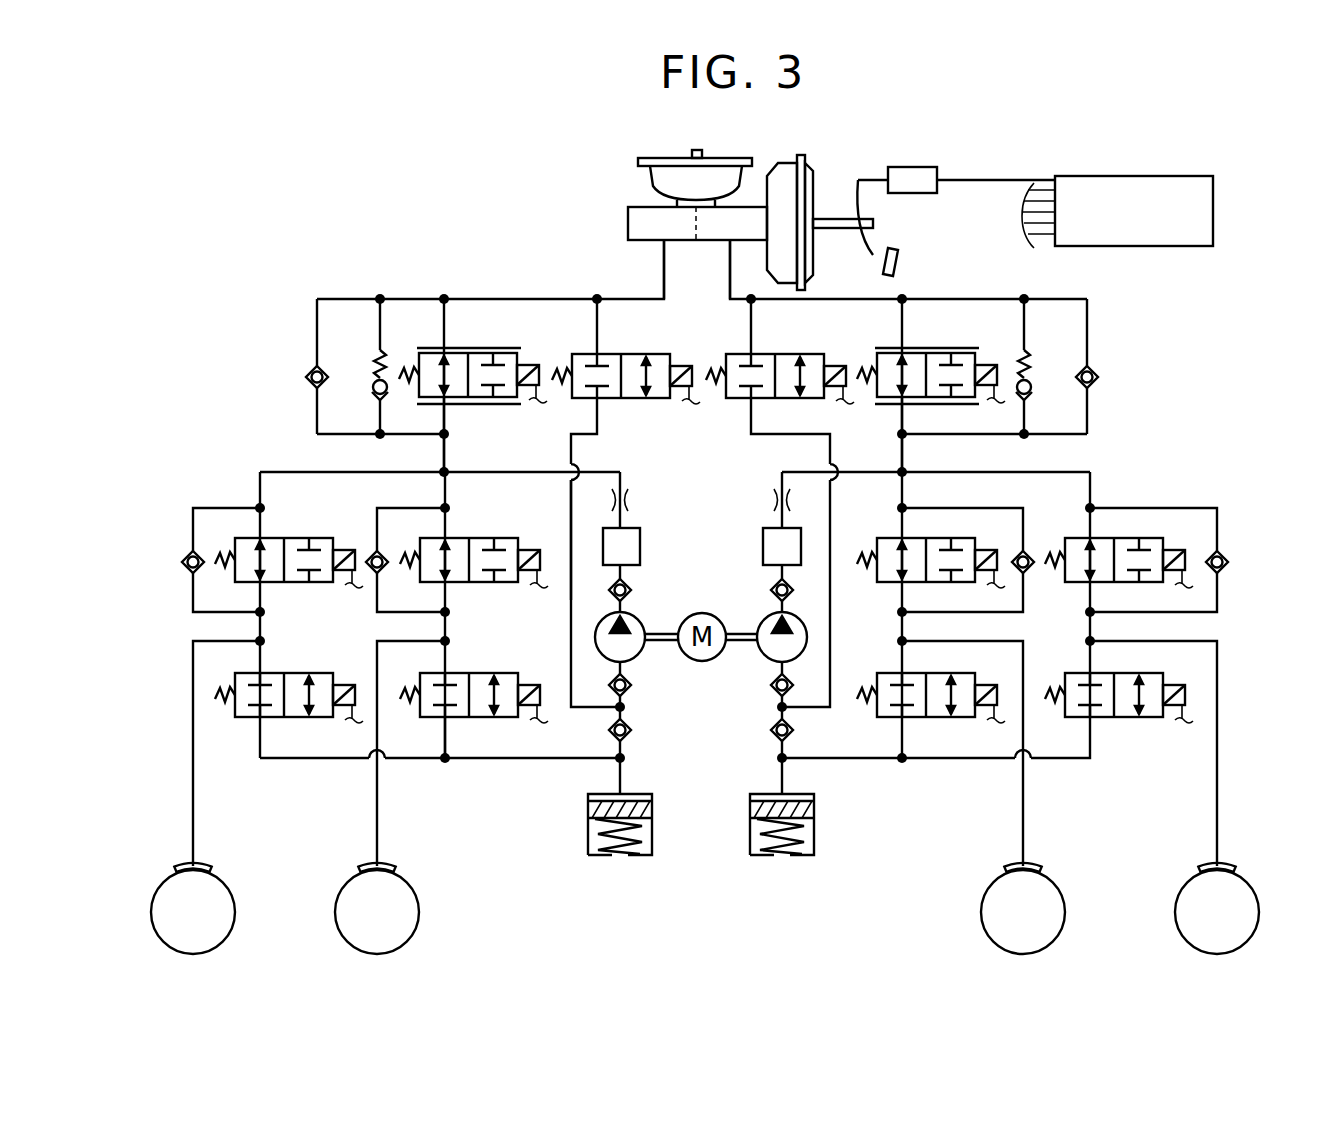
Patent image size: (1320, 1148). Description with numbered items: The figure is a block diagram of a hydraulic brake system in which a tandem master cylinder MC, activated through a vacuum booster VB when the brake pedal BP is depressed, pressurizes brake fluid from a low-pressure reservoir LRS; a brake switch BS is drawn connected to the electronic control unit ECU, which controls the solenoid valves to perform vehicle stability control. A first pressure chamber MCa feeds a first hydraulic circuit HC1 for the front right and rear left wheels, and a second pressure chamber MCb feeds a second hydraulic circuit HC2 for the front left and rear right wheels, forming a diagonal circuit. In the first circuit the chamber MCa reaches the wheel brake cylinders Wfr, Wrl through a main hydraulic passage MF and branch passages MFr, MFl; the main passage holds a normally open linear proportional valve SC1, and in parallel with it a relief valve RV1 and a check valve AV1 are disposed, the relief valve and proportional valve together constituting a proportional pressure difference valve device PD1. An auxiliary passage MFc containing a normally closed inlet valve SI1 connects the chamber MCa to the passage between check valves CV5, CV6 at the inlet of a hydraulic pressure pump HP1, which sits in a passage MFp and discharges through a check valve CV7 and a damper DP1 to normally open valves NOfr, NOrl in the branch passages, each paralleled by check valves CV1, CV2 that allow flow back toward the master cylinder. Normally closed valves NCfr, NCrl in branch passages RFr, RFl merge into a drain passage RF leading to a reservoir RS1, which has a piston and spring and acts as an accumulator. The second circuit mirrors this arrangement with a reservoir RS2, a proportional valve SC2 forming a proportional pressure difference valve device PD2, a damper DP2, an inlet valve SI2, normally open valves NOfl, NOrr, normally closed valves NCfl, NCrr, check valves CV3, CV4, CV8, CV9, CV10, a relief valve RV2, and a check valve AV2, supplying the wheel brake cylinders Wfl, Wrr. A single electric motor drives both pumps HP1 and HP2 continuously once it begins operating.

The low-pressure reservoir LRS is at (660, 186).
The master cylinder MC is at (628, 222).
The first pressure chamber MCa is at (650, 244).
The second pressure chamber MCb is at (722, 244).
The vacuum booster VB is at (815, 262).
The brake pedal BP is at (875, 237).
The brake switch BS is at (956, 180).
The electronic control unit ECU is at (1117, 212).
The first hydraulic circuit HC1 is at (444, 288).
The second hydraulic circuit HC2 is at (963, 288).
The proportional valve SC1 is at (468, 352).
The proportional solenoid valve SC2 is at (926, 352).
The inlet valve SI1 is at (622, 353).
The inlet valve SI2 is at (776, 353).
The check valve AV1 is at (308, 384).
The check valve AV2 is at (1096, 384).
The relief valve RV1 is at (370, 392).
The relief valve RV2 is at (1034, 392).
The proportional pressure difference valve device PD1 is at (507, 414).
The proportional pressure difference valve device PD2 is at (873, 414).
The main hydraulic passage MF is at (444, 468).
The auxiliary hydraulic passage MFc is at (574, 469).
The passage MFp is at (624, 493).
The branch hydraulic passage MFr is at (262, 500).
The branch hydraulic passage MFl is at (447, 500).
The check valve CV1 is at (196, 551).
The check valve CV2 is at (380, 551).
The check valve CV3 is at (1020, 553).
The check valve CV4 is at (1214, 553).
The check valve CV5 is at (632, 731).
The check valve CV6 is at (632, 686).
The check valve CV7 is at (632, 590).
The check valve CV8 is at (771, 731).
The check valve CV9 is at (771, 686).
The check valve CV10 is at (772, 586).
The normally open valve NOfr is at (284, 538).
The normally open valve NOrl is at (468, 538).
The normally open valve NOfl is at (926, 538).
The normally open valve NOrr is at (1114, 538).
The normally closed valve NCfr is at (284, 672).
The normally closed valve NCrl is at (467, 672).
The normally closed valve NCfl is at (926, 672).
The normally closed valve NCrr is at (1114, 672).
The damper DP1 is at (626, 528).
The damper DP2 is at (760, 528).
The hydraulic pressure pump HP1 is at (634, 617).
The hydraulic pressure pump HP2 is at (768, 616).
The branch passage RFl is at (447, 750).
The branch passage RFr is at (301, 760).
The drain passage RF is at (468, 760).
The reservoir RS1 is at (588, 810).
The reservoir RS2 is at (814, 812).
The wheel brake cylinder Wfr is at (176, 870).
The wheel brake cylinder Wrl is at (360, 870).
The wheel brake cylinder Wfl is at (1040, 870).
The wheel brake cylinder Wrr is at (1234, 870).